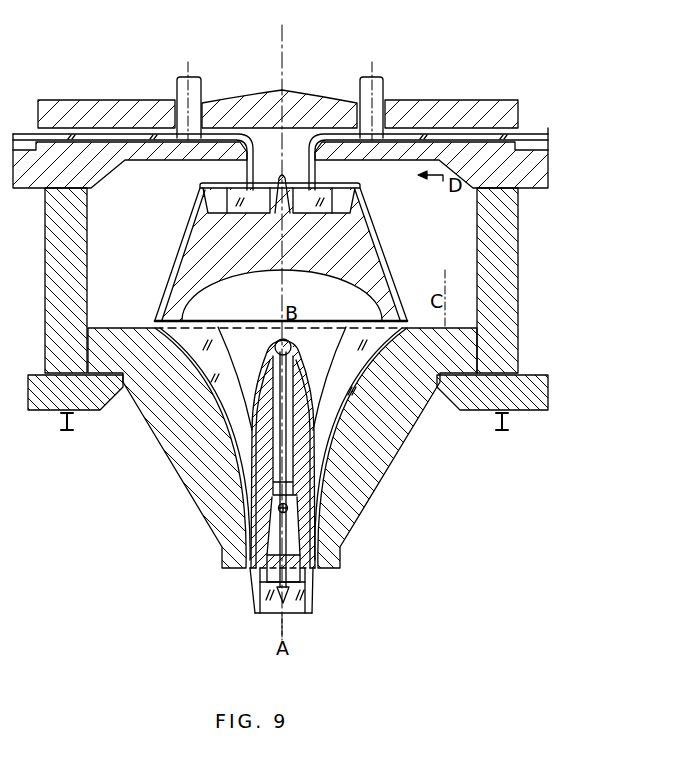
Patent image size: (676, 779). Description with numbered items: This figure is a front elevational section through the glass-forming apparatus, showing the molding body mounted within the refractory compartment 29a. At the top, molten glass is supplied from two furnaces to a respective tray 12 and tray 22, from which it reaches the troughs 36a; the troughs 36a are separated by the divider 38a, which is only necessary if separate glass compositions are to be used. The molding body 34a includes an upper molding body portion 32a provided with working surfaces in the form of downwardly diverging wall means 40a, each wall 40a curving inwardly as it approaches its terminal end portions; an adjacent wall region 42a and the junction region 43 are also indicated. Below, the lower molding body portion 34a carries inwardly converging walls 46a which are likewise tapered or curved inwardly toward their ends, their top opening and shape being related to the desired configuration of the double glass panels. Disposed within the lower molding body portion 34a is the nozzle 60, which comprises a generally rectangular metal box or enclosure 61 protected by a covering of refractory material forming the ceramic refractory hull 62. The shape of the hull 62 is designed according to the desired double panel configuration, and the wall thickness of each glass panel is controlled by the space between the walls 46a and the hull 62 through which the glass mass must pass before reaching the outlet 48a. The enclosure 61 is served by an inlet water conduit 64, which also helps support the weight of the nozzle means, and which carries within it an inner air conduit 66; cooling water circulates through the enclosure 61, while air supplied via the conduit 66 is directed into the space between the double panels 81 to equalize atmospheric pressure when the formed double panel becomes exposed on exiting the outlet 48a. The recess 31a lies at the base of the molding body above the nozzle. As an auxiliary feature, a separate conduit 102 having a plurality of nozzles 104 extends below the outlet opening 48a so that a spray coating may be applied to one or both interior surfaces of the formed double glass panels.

The tray 12 is at (125, 133).
The tray 22 is at (408, 133).
The refractory compartment 29a is at (528, 308).
The dome recess 31a is at (293, 273).
The upper molding body portion 32a is at (480, 270).
The lower molding body portion 34a is at (416, 446).
The troughs 36a is at (200, 183).
The divider 38a is at (280, 176).
The downwardly diverging wall means 40a is at (374, 224).
The conical body 42a is at (396, 256).
The junction line 43 is at (447, 327).
The inwardly converging walls 46a is at (280, 366).
The outlet 48a is at (252, 570).
The nozzle 60 is at (254, 463).
The metal box or enclosure 61 is at (298, 480).
The ceramic refractory hull 62 is at (282, 480).
The water conduit 64 is at (280, 342).
The air conduit 66 is at (237, 452).
The double panels 81 is at (314, 604).
The separate conduit 102 is at (290, 511).
The nozzles 104 is at (292, 573).